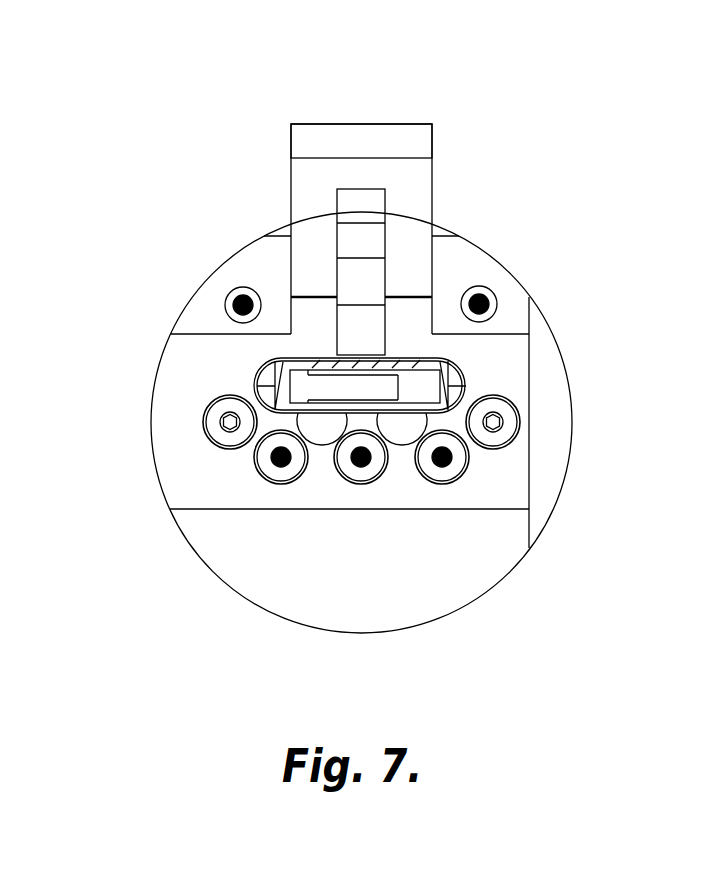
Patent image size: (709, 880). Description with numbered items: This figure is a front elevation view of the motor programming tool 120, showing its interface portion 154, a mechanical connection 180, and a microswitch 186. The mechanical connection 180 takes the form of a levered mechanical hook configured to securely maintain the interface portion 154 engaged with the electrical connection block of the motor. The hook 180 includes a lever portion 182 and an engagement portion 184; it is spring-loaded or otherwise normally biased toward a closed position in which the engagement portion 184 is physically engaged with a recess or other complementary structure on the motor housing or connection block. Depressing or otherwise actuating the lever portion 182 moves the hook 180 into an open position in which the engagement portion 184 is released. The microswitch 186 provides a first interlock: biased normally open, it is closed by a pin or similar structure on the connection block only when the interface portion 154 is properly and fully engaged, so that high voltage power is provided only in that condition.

The programming tool 120 is at (560, 298).
The interface portion 154 is at (195, 478).
The mechanical connection 180 is at (460, 148).
The lever portion 182 is at (309, 135).
The engagement portion 184 is at (358, 273).
The microswitch 186 is at (420, 383).